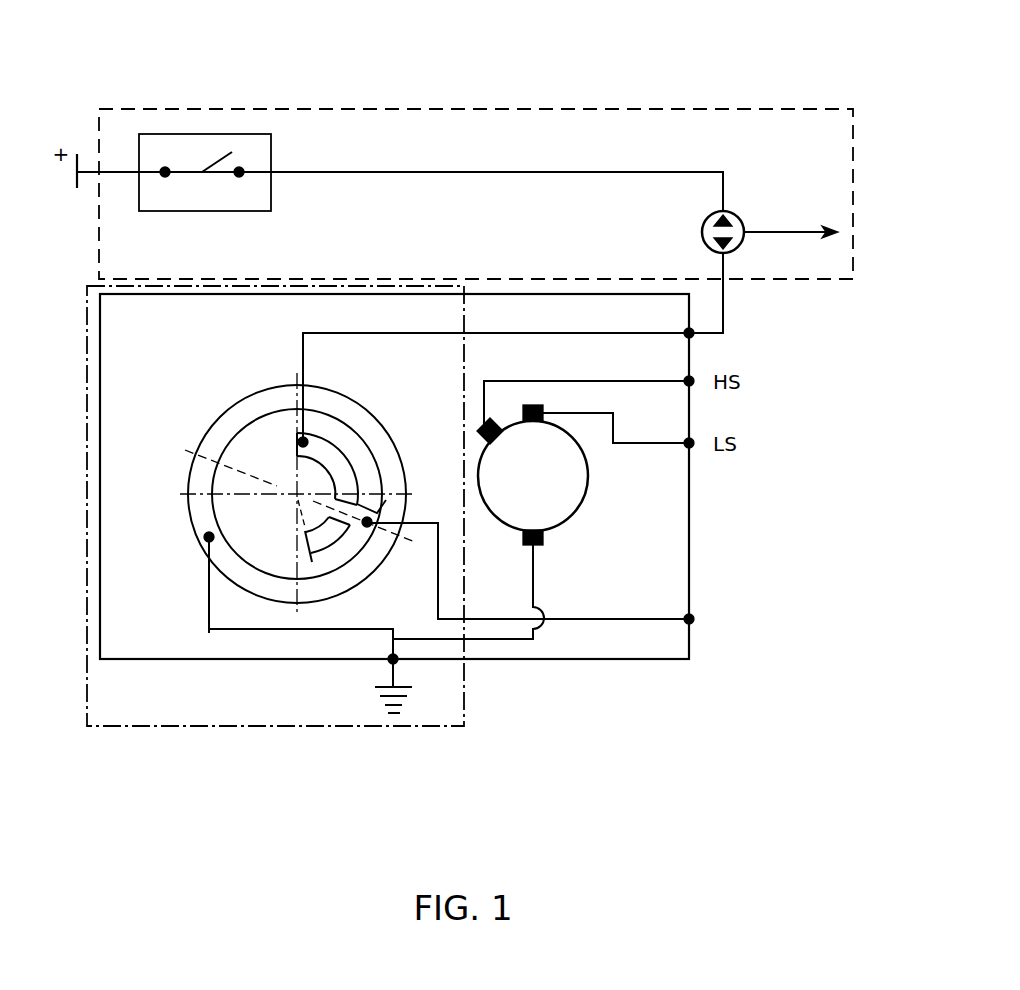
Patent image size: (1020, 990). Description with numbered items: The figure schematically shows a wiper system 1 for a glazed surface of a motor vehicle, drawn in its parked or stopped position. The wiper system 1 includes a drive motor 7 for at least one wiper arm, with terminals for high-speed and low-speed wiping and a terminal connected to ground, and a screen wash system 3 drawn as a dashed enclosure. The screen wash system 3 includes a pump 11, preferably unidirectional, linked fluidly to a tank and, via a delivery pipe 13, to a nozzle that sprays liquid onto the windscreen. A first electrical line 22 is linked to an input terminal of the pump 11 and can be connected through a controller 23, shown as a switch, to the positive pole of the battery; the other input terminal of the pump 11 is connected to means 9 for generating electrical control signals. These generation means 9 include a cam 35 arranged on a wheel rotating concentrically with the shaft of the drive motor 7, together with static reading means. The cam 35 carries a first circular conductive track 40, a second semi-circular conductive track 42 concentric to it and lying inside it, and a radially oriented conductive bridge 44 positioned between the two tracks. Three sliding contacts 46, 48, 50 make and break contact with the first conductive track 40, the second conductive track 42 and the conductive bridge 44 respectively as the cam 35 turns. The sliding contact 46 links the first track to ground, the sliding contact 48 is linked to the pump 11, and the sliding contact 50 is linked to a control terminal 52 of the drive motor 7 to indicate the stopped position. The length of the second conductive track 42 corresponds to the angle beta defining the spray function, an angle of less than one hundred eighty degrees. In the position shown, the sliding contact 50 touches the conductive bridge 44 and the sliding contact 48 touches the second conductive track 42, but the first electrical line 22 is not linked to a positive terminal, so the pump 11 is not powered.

The wiper system 1 is at (575, 715).
The screen wash system 3 is at (590, 108).
The drive motor 7 is at (582, 505).
The means for generating electrical control signals 9 is at (257, 727).
The pump 11 is at (702, 231).
The delivery pipe 13 is at (785, 232).
The first electrical line 22 is at (438, 172).
The controller 23 is at (198, 134).
The cam 35 is at (205, 432).
The first circular conductive track 40 is at (237, 403).
The second semi-circular conductive track 42 is at (328, 457).
The conductive bridge 44 is at (386, 500).
The sliding contact 46 is at (203, 543).
The sliding contact 48 is at (306, 439).
The sliding contact 50 is at (360, 532).
The control terminal 52 is at (700, 621).